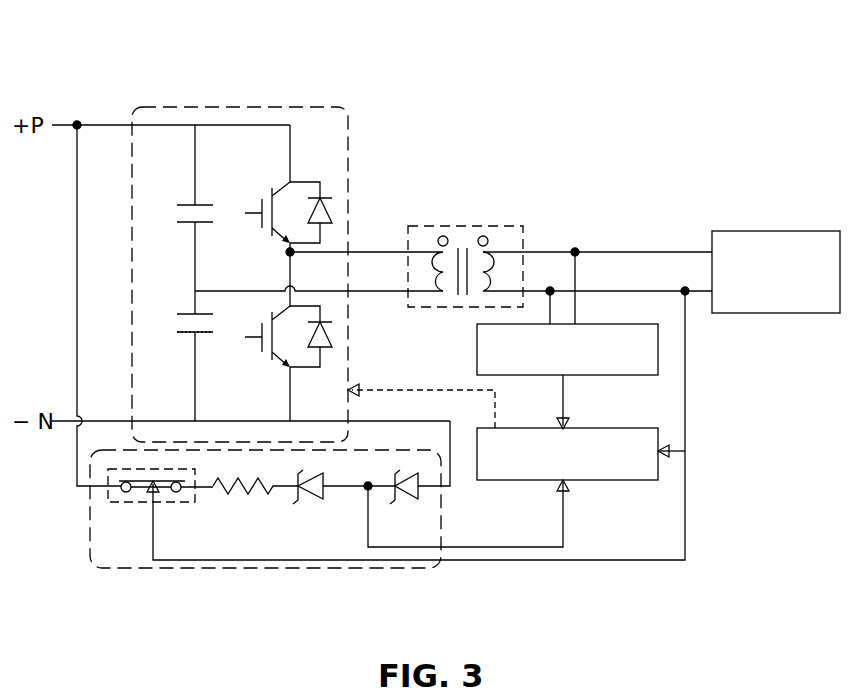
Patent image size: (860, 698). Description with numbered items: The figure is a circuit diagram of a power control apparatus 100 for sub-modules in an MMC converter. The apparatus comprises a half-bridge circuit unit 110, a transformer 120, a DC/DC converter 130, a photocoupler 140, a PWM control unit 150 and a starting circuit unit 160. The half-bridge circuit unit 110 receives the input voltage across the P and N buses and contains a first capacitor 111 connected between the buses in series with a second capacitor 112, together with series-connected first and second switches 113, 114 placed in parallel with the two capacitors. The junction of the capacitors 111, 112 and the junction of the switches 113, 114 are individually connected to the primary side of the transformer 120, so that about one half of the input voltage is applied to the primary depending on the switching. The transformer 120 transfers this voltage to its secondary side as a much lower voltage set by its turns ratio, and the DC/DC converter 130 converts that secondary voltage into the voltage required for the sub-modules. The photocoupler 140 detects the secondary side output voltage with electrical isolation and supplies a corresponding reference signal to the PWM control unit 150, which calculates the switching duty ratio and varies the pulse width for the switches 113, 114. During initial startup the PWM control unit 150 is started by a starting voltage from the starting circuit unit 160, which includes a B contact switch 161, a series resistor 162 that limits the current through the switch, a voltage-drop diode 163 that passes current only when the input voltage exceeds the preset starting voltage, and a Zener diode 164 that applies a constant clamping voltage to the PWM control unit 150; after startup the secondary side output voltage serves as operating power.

The power control apparatus 100 is at (114, 36).
The half-bridge circuit unit 110 is at (243, 100).
The first capacitor 111 is at (188, 198).
The second capacitor 112 is at (186, 342).
The first switch 113 is at (278, 180).
The second switch 114 is at (276, 366).
The transformer 120 is at (464, 226).
The DC/DC converter 130 is at (770, 231).
The photocoupler 140 is at (477, 350).
The PWM control unit 150 is at (660, 470).
The starting circuit unit 160 is at (218, 574).
The B contact switch 161 is at (140, 504).
The resistor 162 is at (245, 498).
The voltage-drop diode 163 is at (325, 500).
The Zener diode 164 is at (430, 500).